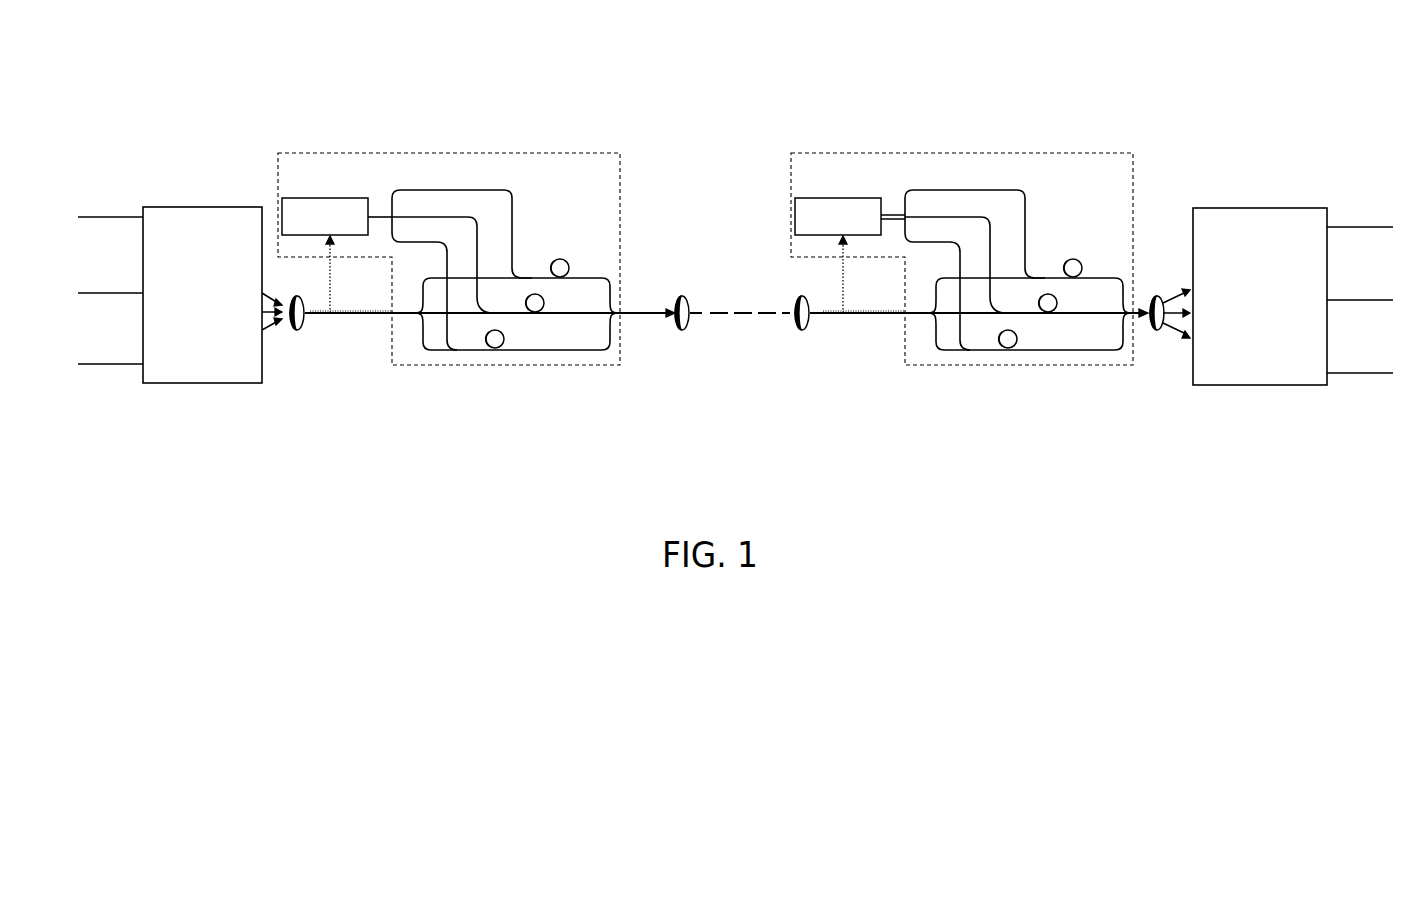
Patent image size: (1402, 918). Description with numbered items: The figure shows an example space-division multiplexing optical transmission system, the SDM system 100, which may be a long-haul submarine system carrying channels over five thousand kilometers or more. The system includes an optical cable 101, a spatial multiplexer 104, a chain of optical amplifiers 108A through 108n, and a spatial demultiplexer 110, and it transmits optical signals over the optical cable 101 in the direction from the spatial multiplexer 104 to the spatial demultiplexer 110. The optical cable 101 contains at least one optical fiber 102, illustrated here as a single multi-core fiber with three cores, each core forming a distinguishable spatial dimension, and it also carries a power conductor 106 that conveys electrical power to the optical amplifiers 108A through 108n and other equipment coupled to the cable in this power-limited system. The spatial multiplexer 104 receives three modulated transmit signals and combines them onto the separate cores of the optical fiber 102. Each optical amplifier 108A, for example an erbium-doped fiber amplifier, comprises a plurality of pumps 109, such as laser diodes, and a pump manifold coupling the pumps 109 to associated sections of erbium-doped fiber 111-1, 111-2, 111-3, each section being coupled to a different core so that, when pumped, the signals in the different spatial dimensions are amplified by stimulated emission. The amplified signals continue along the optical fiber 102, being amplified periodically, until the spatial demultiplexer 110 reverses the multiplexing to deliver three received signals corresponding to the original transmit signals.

The SDM system 100 is at (510, 90).
The optical cable 101 is at (302, 332).
The optical fiber 102 is at (370, 315).
The spatial multiplexer 104 is at (187, 334).
The power conductor 106 is at (339, 311).
The optical amplifier 108A is at (332, 186).
The optical amplifier 108n is at (845, 186).
The pumps 109 is at (354, 195).
The spatial demultiplexer 110 is at (1244, 337).
The section of erbium-doped fiber 111-1 is at (561, 258).
The section of erbium-doped fiber 111-2 is at (545, 299).
The section of erbium-doped fiber 111-3 is at (506, 338).